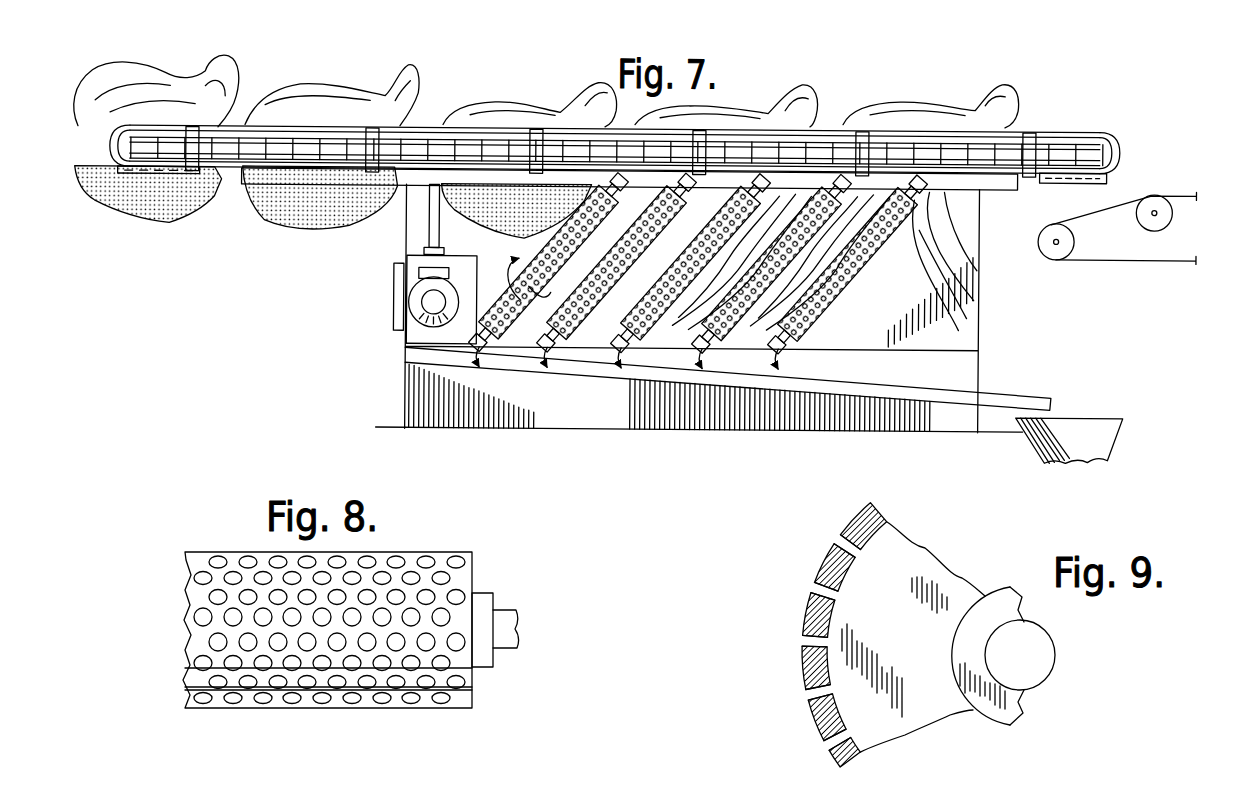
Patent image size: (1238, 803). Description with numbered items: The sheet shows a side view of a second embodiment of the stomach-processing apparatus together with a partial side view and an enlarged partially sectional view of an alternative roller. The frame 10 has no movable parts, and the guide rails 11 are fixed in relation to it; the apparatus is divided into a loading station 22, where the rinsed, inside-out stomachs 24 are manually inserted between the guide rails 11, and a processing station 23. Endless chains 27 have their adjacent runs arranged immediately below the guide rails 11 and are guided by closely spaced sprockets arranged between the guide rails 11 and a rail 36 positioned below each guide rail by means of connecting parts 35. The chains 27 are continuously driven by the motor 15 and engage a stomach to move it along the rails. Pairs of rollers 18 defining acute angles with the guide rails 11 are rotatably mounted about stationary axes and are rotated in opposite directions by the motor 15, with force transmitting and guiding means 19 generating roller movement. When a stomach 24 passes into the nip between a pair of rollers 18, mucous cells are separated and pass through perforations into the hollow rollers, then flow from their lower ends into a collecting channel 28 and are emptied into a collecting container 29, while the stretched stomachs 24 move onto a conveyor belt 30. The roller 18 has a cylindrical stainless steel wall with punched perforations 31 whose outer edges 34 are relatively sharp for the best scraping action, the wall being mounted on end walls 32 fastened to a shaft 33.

In FIG. 7, the frame 10 is at (976, 306).
In FIG. 7, the guide rails 11 is at (425, 127).
In FIG. 7, the motor 15 is at (417, 318).
In FIG. 7, the rollers 18 is at (652, 342).
In FIG. 8, the rollers 18 is at (327, 633).
In FIG. 9, the rollers 18 is at (888, 638).
In FIG. 7, the force transmitting and guiding means 19 is at (410, 266).
In FIG. 7, the loading station 22 is at (278, 127).
In FIG. 7, the processing station 23 is at (947, 128).
In FIG. 7, the stomachs 24 is at (200, 93).
In FIG. 7, the endless chains 27 is at (813, 149).
In FIG. 7, the collecting channel 28 is at (1012, 391).
In FIG. 7, the collecting container 29 is at (1105, 430).
In FIG. 7, the conveyor belt 30 is at (1133, 254).
In FIG. 8, the perforations 31 is at (462, 561).
In FIG. 9, the perforations 31 is at (819, 590).
In FIG. 9, the end walls 32 is at (917, 718).
In FIG. 8, the shaft 33 is at (505, 645).
In FIG. 9, the shaft 33 is at (1056, 652).
In FIG. 9, the outer edges 34 is at (812, 686).
In FIG. 7, the connecting parts 35 is at (557, 127).
In FIG. 7, the rail 36 is at (750, 165).